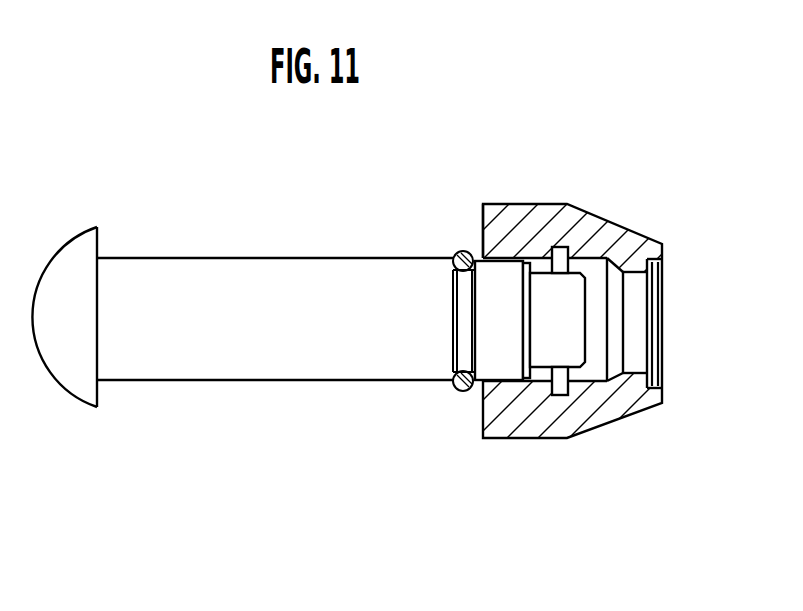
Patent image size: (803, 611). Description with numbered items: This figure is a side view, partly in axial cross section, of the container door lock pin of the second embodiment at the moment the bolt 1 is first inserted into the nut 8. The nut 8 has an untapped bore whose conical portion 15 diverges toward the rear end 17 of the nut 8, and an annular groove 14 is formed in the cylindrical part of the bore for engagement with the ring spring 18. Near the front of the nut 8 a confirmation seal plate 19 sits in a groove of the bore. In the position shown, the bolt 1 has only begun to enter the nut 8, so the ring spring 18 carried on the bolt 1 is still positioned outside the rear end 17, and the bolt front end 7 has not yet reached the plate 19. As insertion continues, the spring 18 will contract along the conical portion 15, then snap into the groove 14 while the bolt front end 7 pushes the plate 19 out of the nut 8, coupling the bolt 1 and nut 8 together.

The bolt 1 is at (218, 277).
The bolt front end 7 is at (619, 275).
The nut 8 is at (535, 203).
The annular groove 14 is at (587, 288).
The conical portion 15 is at (480, 254).
The rear end 17 is at (482, 217).
The ring spring 18 is at (460, 252).
The confirmation seal plate 19 is at (652, 280).